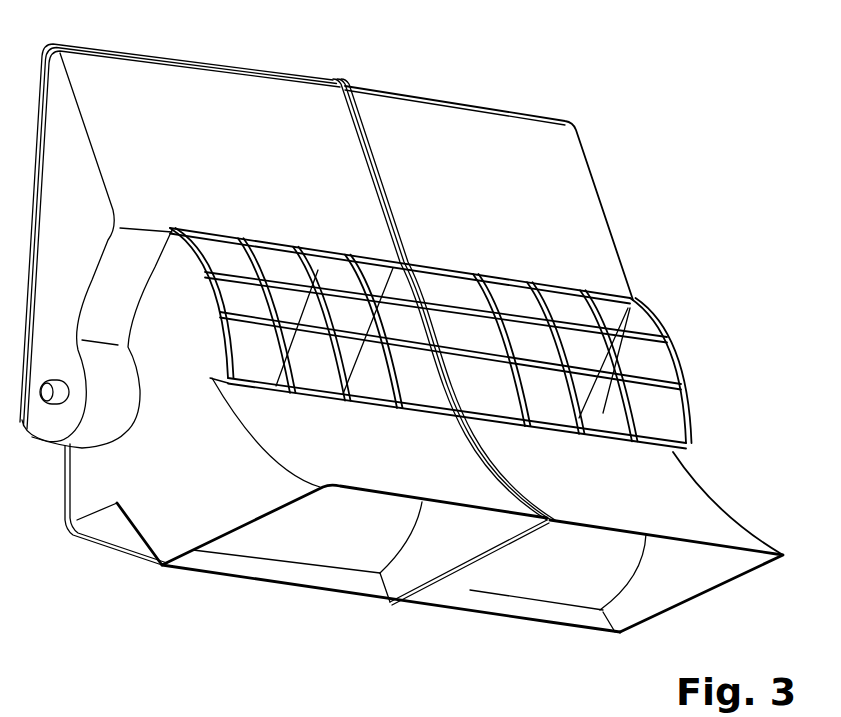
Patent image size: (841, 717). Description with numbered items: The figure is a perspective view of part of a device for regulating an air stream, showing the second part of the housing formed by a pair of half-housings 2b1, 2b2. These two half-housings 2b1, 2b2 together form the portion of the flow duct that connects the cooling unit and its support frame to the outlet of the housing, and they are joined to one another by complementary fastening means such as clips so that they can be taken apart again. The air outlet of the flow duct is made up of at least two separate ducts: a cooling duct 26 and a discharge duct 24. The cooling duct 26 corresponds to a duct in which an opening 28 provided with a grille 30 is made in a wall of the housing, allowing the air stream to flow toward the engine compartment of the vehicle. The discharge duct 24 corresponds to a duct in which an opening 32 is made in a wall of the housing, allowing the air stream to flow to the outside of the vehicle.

The half-housing 2b1 is at (557, 190).
The half-housing 2b2 is at (175, 100).
The cooling duct 26 is at (467, 357).
The opening 28 is at (590, 348).
The grille 30 is at (583, 396).
The discharge duct 24 is at (430, 578).
The opening 32 is at (562, 566).